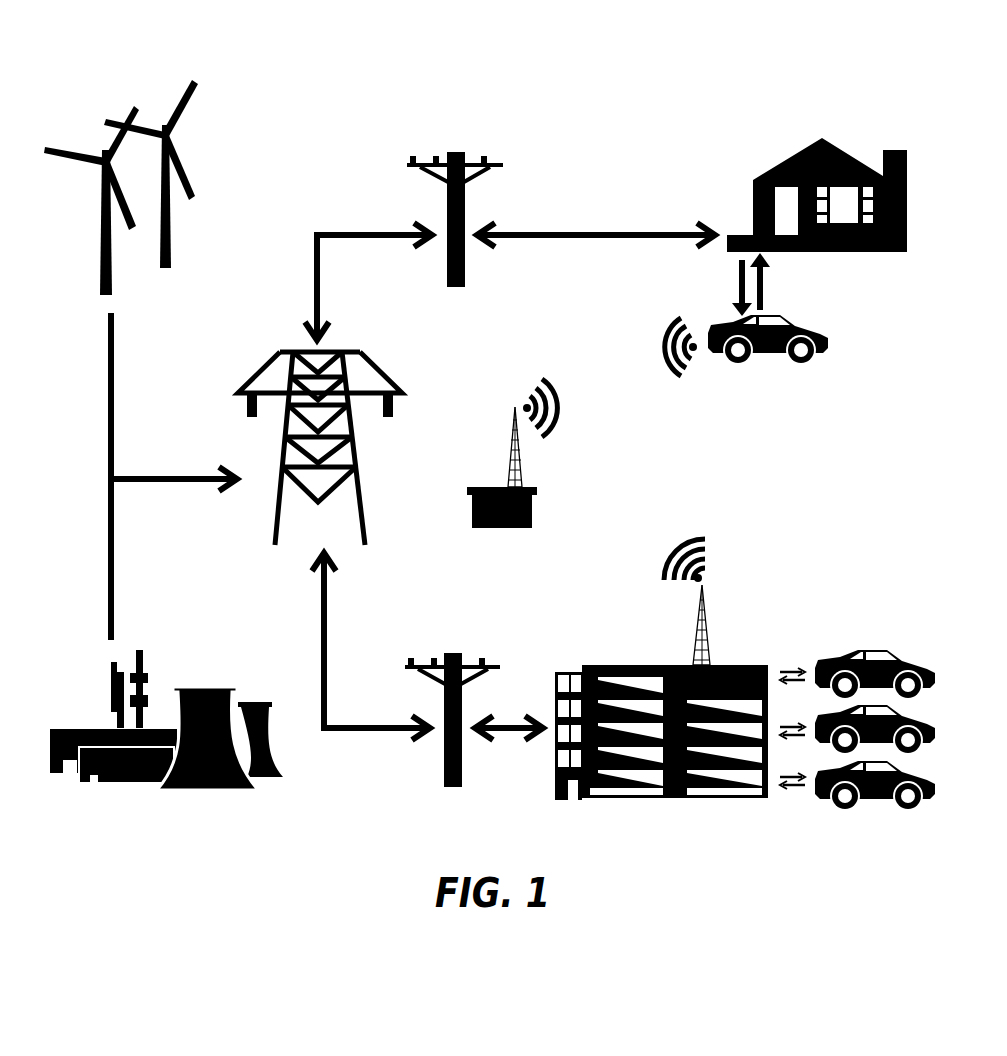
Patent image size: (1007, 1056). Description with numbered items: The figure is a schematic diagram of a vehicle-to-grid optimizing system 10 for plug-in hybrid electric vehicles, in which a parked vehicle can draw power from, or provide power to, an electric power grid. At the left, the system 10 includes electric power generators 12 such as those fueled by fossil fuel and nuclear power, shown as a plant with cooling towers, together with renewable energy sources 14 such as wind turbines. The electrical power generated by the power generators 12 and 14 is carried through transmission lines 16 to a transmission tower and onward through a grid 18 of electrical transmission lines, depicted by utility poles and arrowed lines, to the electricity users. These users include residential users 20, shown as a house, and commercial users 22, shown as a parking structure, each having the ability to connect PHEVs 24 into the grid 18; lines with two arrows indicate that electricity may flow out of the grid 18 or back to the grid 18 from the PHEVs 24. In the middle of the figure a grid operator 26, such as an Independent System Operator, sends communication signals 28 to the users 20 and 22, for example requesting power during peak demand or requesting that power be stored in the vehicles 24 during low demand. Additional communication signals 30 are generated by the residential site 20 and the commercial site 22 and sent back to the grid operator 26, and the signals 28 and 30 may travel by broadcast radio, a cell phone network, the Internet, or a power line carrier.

The vehicle-to-grid optimizing system 10 is at (324, 56).
The electric power generators 12 is at (250, 700).
The renewable energy sources 14 is at (187, 178).
The transmission lines 16 is at (140, 473).
The grid 18 is at (333, 230).
The residential users 20 is at (830, 143).
The commercial users 22 is at (732, 663).
The PHEVs 24 is at (820, 332).
The grid operator 26 is at (532, 485).
The communication signals 28 is at (547, 377).
The additional communication signals 30 is at (672, 318).